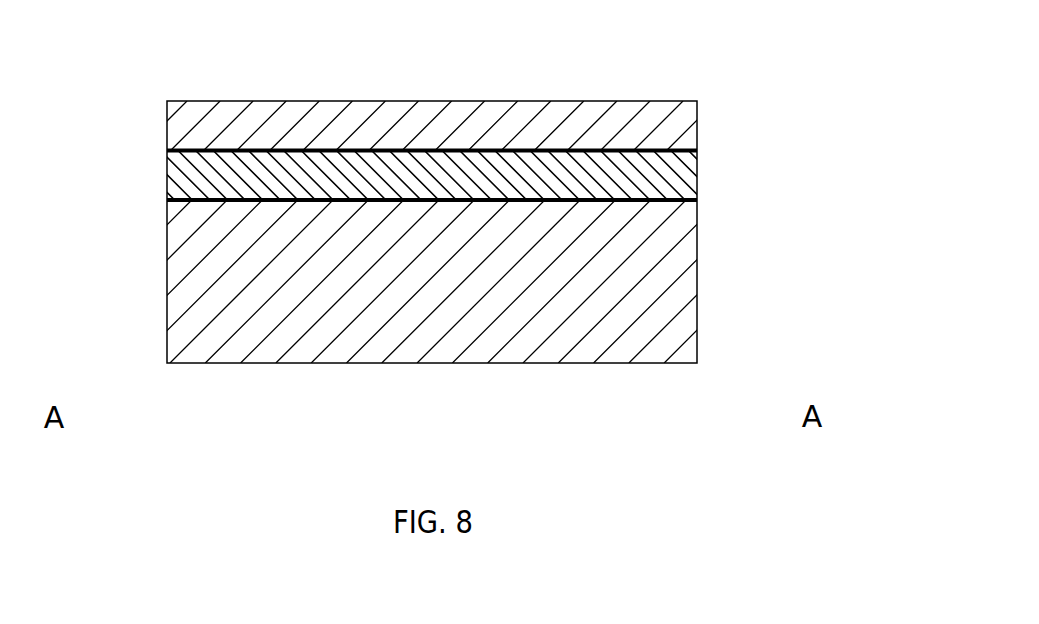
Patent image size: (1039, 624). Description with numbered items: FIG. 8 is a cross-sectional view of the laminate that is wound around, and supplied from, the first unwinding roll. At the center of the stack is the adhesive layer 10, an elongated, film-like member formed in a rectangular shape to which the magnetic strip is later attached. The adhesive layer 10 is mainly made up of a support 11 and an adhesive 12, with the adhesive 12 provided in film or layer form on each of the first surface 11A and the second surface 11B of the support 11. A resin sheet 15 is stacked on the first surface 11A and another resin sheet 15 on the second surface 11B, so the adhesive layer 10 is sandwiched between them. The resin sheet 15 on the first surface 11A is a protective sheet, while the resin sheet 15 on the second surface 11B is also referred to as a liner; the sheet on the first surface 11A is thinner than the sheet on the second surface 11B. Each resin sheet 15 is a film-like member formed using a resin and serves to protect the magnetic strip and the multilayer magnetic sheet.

The adhesive layer 10 is at (787, 177).
The support 11 is at (698, 178).
The first surface 11A is at (302, 151).
The second surface 11B is at (302, 200).
The adhesive 12 is at (698, 152).
The resin sheet 15 is at (167, 125).